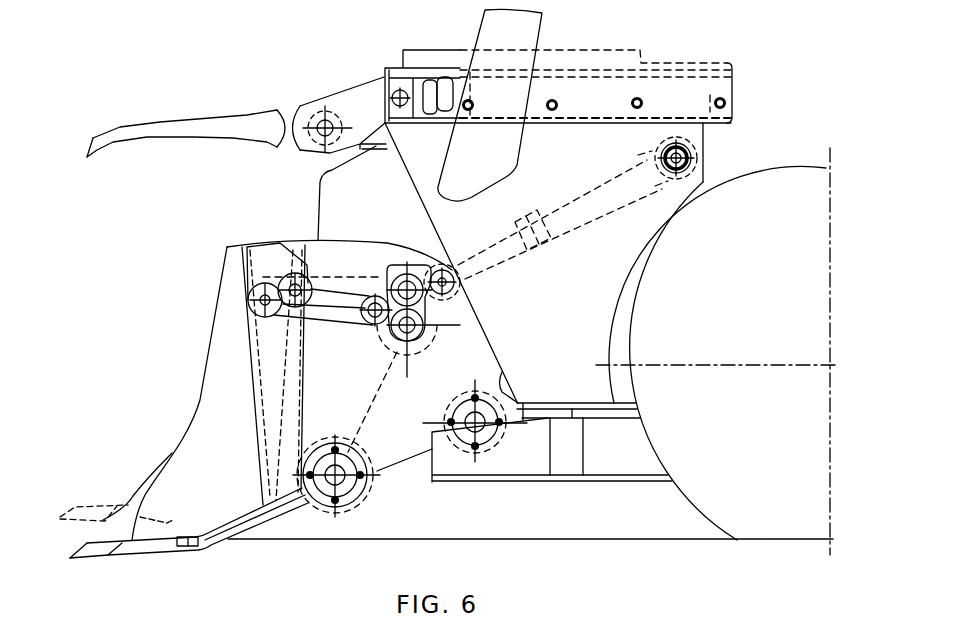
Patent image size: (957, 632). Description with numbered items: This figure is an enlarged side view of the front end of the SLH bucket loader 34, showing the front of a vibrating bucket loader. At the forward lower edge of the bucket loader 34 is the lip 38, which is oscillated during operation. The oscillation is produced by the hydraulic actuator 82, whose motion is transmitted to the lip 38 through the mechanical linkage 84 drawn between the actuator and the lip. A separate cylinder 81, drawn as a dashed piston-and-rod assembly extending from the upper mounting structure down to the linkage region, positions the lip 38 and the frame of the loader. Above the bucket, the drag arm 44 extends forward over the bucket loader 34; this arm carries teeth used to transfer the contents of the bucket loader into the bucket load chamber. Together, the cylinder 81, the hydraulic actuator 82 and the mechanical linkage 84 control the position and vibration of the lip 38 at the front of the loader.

The SLH bucket loader 34 is at (213, 430).
The lip 38 is at (108, 540).
The drag arm 44 is at (218, 120).
The cylinder 81 is at (597, 183).
The hydraulic actuator 82 is at (405, 338).
The mechanical linkage 84 is at (343, 275).